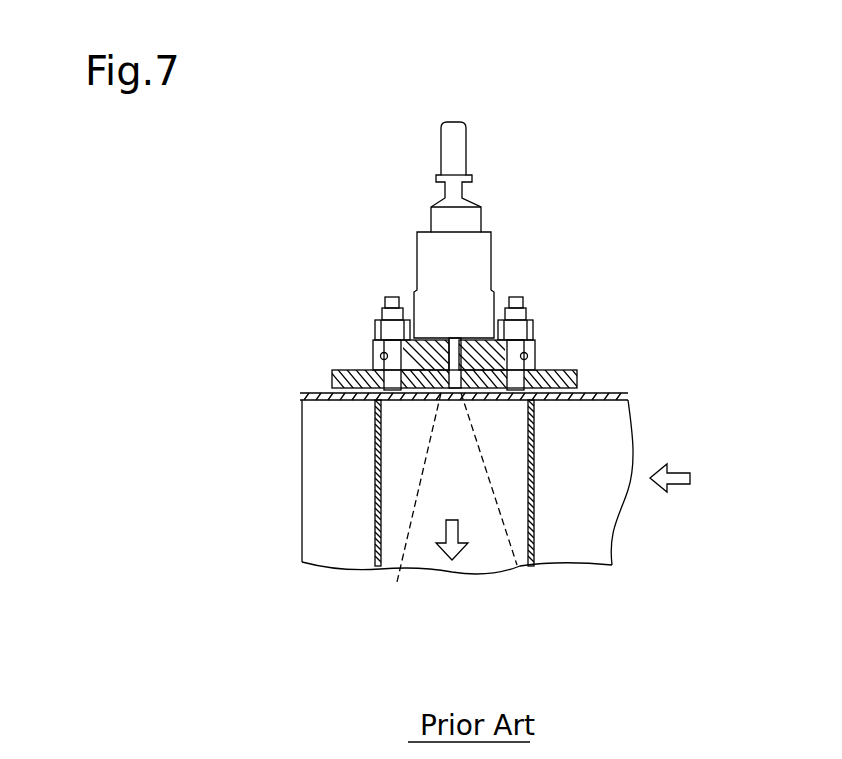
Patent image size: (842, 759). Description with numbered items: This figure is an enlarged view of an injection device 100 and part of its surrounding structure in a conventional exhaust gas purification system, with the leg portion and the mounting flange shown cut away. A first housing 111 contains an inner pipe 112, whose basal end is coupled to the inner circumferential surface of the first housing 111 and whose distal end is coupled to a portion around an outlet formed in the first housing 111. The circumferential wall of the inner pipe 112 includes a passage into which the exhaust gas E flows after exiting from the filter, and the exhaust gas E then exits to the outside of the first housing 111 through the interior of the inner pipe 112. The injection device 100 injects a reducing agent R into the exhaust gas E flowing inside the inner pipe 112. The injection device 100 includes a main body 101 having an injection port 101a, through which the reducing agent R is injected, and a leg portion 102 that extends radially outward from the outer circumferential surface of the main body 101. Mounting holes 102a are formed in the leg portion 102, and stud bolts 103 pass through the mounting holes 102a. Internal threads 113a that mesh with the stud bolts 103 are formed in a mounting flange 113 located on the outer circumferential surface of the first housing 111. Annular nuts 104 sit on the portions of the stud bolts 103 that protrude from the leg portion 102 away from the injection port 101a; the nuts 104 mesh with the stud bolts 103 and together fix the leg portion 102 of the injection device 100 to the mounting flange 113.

The injection device 100 is at (381, 201).
The main body 101 is at (467, 148).
The injection port 101a is at (458, 390).
The leg portion 102 is at (375, 347).
The mounting holes 102a is at (380, 357).
The stud bolts 103 is at (392, 297).
The nuts 104 is at (376, 325).
The first housing 111 is at (628, 400).
The inner pipe 112 is at (531, 566).
The mounting flange 113 is at (334, 378).
The internal threads 113a is at (352, 400).
The reducing agent R is at (397, 570).
The exhaust gas E is at (455, 566).